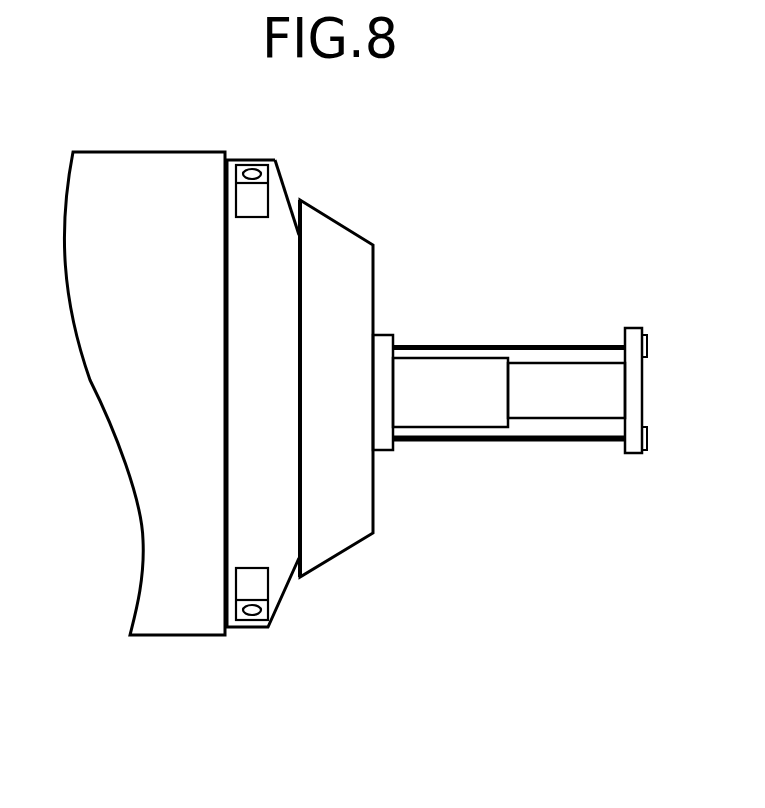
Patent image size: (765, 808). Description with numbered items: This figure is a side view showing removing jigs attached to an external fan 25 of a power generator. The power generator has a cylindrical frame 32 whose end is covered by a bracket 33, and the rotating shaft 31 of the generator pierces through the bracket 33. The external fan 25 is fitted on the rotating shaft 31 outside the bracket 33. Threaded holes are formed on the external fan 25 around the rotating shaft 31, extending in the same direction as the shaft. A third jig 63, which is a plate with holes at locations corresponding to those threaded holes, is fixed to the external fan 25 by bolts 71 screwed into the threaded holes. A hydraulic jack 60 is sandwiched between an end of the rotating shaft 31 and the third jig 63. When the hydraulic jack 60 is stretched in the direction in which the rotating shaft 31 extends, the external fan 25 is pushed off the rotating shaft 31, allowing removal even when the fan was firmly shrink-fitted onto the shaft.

The external fan 25 is at (347, 505).
The rotating shaft 31 is at (470, 387).
The cylindrical frame 32 is at (178, 555).
The bracket 33 is at (278, 548).
The hydraulic jack 60 is at (570, 387).
The third jig 63 is at (631, 338).
The bolts 71 is at (551, 442).